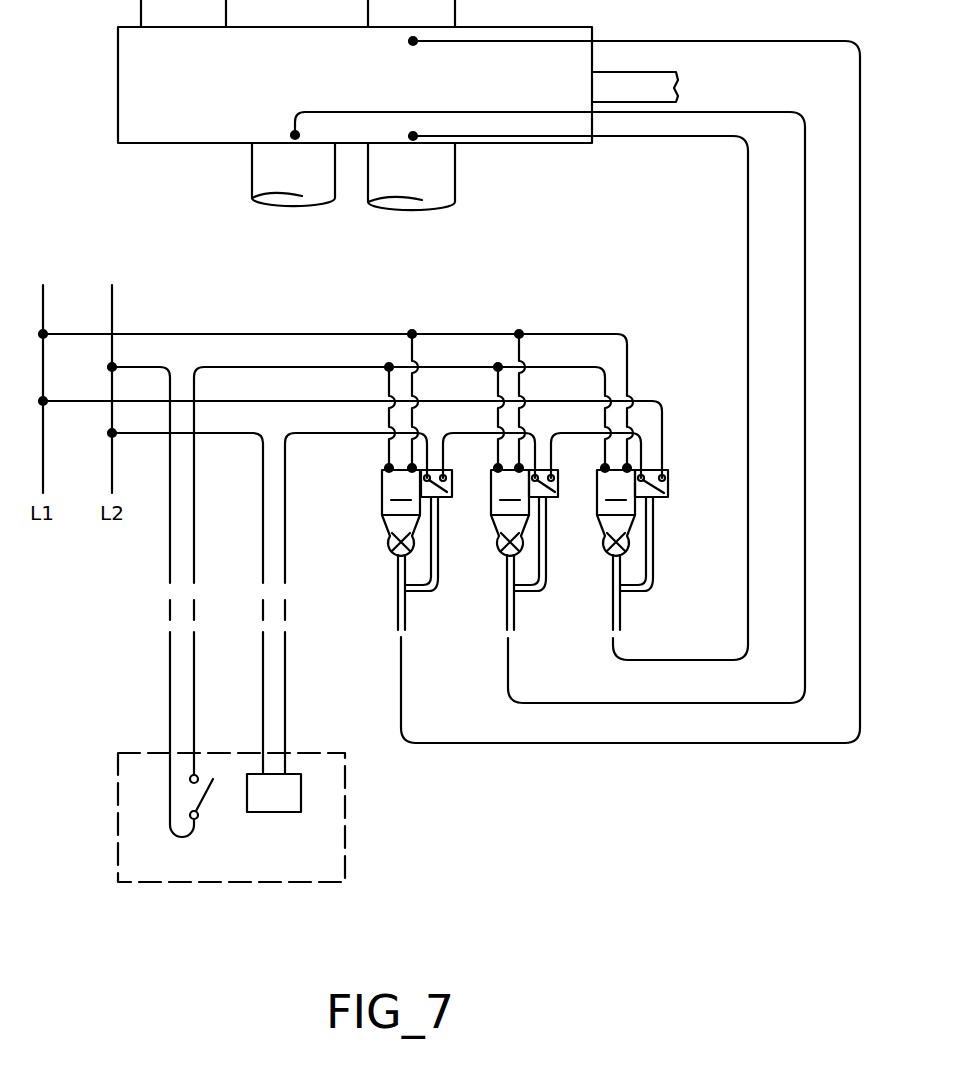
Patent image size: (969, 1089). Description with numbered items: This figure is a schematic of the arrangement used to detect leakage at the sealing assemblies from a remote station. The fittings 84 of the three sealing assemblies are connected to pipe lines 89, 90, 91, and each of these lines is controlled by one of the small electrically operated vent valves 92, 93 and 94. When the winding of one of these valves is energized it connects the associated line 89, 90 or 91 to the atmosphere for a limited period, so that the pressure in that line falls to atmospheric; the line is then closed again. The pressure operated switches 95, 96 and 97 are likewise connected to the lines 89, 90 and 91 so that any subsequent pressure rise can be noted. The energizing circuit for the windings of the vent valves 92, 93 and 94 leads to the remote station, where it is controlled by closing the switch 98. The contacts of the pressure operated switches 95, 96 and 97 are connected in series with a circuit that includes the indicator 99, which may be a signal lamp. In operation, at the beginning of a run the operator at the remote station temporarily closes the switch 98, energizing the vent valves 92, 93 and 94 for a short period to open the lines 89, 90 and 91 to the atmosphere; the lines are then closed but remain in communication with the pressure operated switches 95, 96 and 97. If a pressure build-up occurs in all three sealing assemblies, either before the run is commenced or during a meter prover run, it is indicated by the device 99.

The fittings 84 is at (410, 41).
The pipe line 89 is at (712, 140).
The pipe line 90 is at (737, 112).
The pipe line 91 is at (727, 41).
The vent valve 92 is at (616, 547).
The vent valve 93 is at (510, 480).
The vent valve 94 is at (401, 480).
The pressure operated switch 95 is at (666, 498).
The pressure operated switch 96 is at (556, 498).
The pressure operated switch 97 is at (450, 498).
The switch 98 is at (203, 797).
The indicator 99 is at (282, 812).